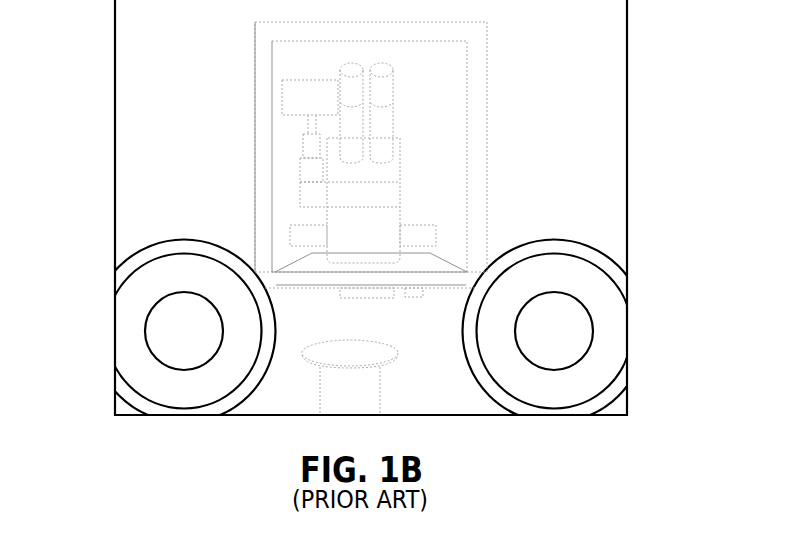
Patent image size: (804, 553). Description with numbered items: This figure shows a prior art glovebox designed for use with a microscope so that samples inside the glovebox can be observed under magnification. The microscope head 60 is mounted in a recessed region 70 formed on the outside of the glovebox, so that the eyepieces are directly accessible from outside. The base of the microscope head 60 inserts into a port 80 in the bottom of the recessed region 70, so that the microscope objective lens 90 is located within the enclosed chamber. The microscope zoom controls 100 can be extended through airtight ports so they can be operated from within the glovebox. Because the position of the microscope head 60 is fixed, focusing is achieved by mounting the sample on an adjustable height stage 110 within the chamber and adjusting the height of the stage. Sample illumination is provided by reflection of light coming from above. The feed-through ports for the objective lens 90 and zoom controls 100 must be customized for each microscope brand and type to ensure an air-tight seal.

The recessed region 70 is at (287, 58).
The microscope head 60 is at (383, 198).
The microscope zoom controls 100 is at (421, 235).
The port 80 is at (355, 263).
The microscope objective lens 90 is at (333, 353).
The adjustable height stage 110 is at (352, 298).